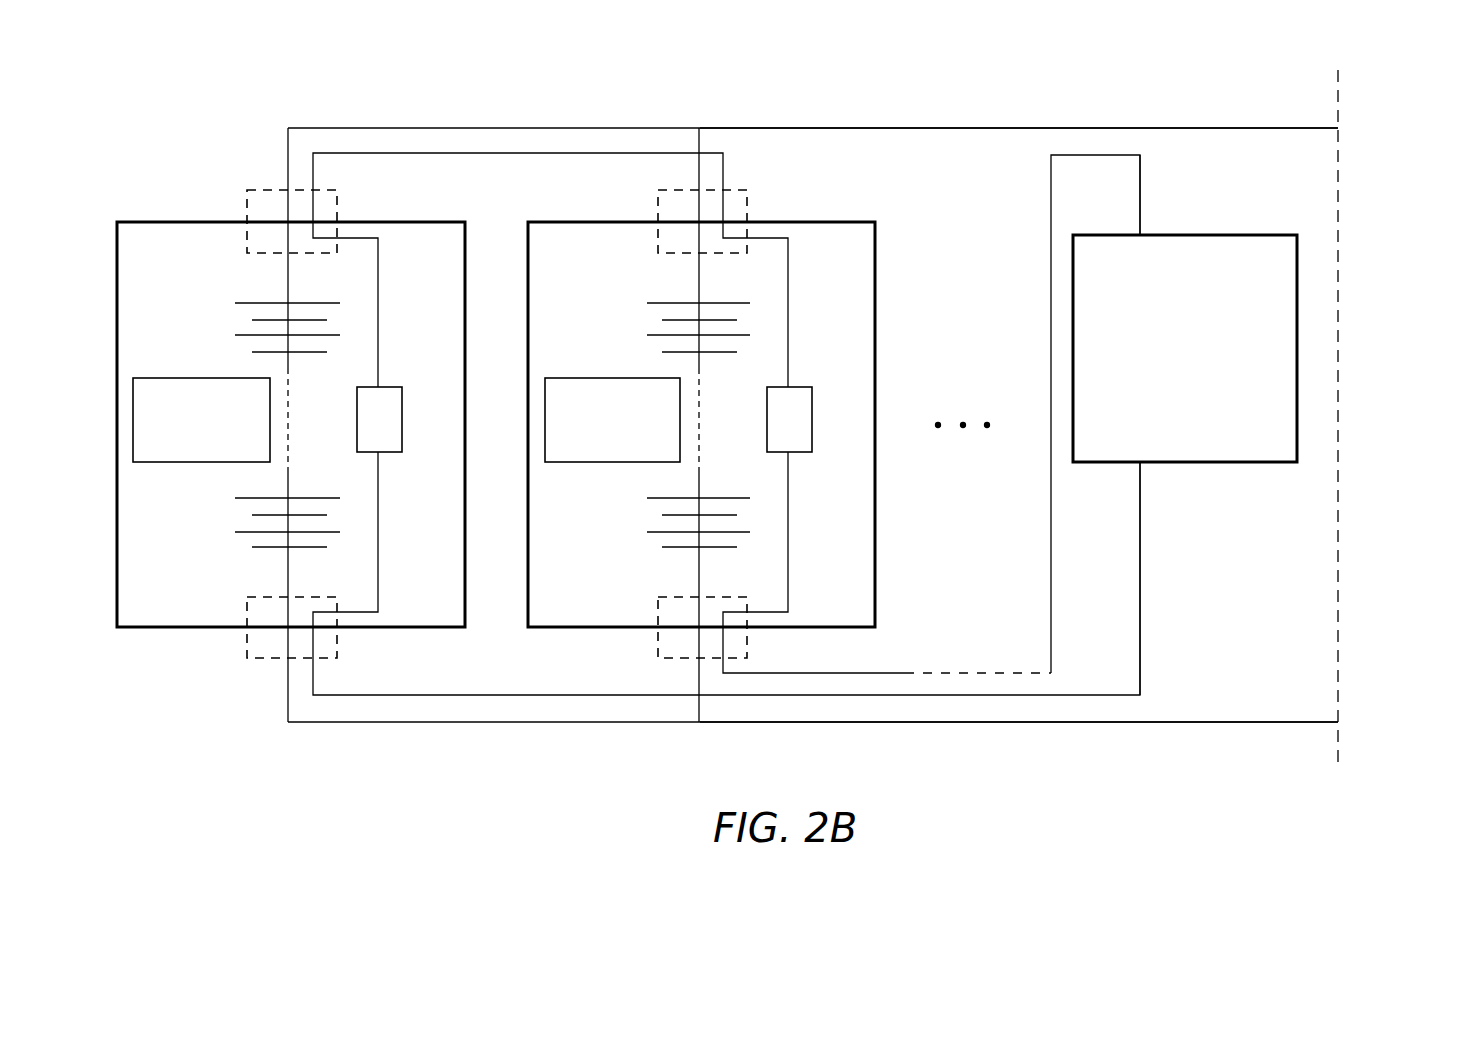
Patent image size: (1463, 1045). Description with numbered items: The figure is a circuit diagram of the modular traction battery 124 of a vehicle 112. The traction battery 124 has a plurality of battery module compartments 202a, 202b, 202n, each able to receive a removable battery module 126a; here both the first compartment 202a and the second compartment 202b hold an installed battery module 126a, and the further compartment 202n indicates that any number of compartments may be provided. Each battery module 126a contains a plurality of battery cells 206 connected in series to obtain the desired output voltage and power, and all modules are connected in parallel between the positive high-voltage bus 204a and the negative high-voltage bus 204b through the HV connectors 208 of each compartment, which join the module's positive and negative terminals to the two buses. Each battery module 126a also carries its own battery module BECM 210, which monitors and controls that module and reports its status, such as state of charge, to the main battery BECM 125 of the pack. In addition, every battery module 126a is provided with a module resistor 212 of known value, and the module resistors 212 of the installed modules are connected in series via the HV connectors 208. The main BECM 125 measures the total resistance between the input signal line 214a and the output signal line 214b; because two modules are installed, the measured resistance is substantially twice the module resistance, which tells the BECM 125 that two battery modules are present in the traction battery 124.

The traction battery 124 is at (745, 97).
The vehicle 112 is at (1383, 448).
The battery electric control module 125 is at (1165, 396).
The battery module 126a is at (213, 562).
The first battery module compartment 202a is at (150, 221).
The second battery module compartment 202b is at (835, 220).
The battery module compartment 202n is at (969, 386).
The positive high-voltage bus 204a is at (1163, 88).
The negative high-voltage bus 204b is at (1163, 760).
The battery cell 206 is at (252, 303).
The HV connector 208 is at (263, 190).
The battery module BECM 210 is at (167, 378).
The module resistor 212 is at (380, 387).
The input signal line S_In 214a is at (1142, 170).
The output signal line S_Out 214b is at (1142, 590).